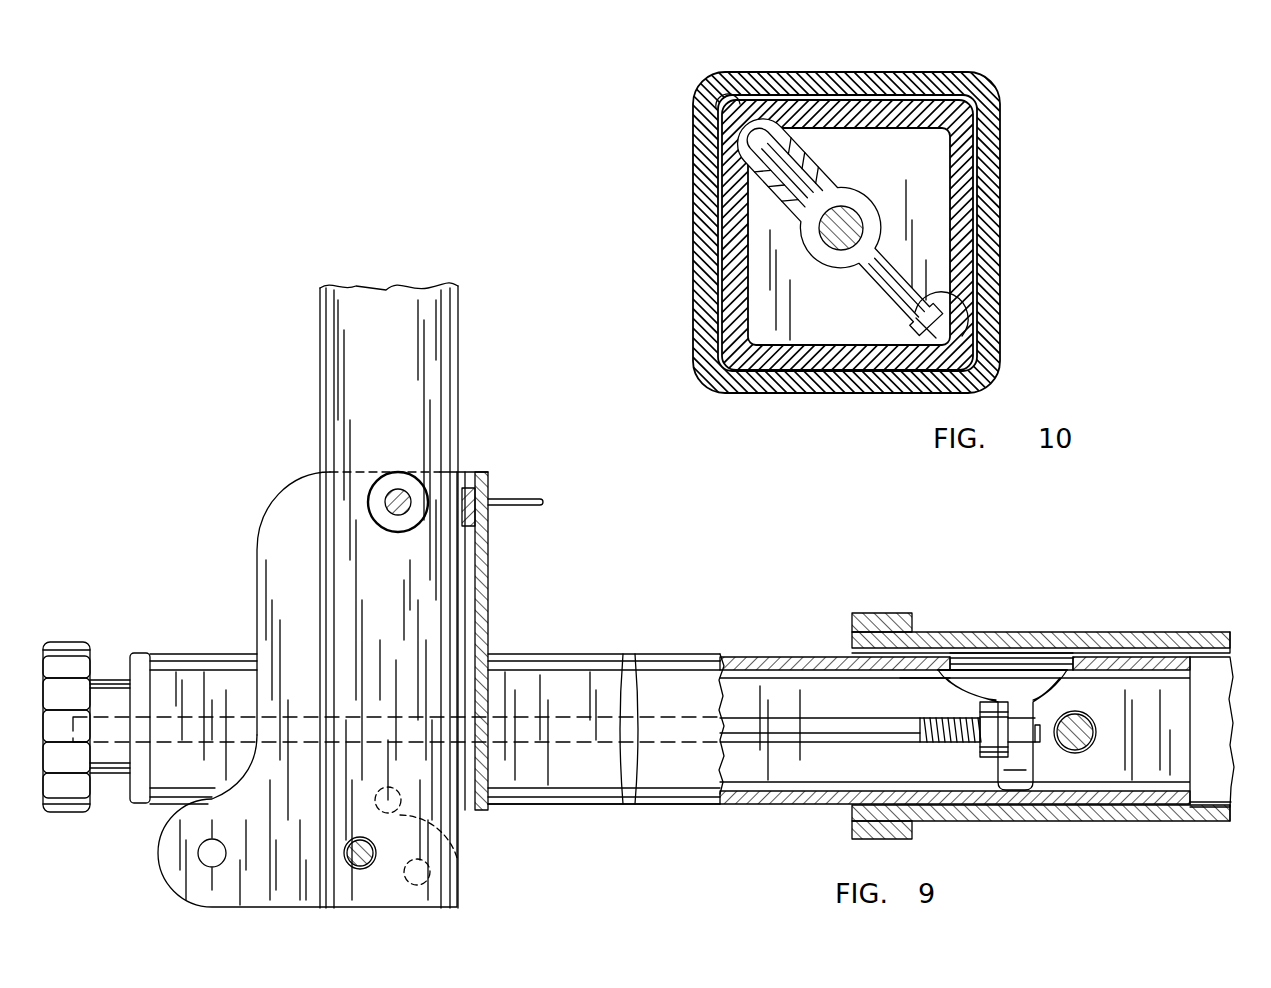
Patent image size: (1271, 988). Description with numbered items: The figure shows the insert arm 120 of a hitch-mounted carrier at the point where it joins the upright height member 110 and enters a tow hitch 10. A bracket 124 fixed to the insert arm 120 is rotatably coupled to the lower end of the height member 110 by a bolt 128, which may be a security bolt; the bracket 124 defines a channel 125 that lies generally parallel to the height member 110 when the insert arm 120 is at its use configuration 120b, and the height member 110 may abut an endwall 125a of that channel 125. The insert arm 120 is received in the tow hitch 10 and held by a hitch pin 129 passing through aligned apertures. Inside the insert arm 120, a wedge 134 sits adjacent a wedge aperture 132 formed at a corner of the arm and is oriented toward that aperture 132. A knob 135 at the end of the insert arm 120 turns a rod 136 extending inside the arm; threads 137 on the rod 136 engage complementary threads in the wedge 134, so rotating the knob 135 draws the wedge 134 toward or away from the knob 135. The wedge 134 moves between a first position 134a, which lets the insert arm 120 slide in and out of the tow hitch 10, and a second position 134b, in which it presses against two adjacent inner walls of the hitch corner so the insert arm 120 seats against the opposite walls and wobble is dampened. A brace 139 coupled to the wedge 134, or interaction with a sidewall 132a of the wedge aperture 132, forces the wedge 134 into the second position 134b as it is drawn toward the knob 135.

In FIG. 9, the tow hitch 10 is at (1207, 616).
In FIG. 10, the tow hitch 10 is at (996, 188).
In FIG. 9, the height member 110 is at (300, 327).
In FIG. 9, the insert arm 120 is at (651, 631).
In FIG. 10, the insert arm 120 is at (966, 262).
In FIG. 9, the use configuration 120b is at (652, 826).
In FIG. 9, the bracket 124 is at (255, 487).
In FIG. 9, the channel 125 is at (482, 450).
In FIG. 9, the endwall 125a is at (496, 560).
In FIG. 9, the bolt 128 is at (362, 858).
In FIG. 9, the hitch pin 129 is at (1088, 718).
In FIG. 9, the wedge aperture 132 is at (962, 660).
In FIG. 9, the sidewall 132a is at (937, 668).
In FIG. 9, the wedge 134 is at (1000, 670).
In FIG. 10, the wedge 134 is at (728, 122).
In FIG. 9, the first position 134a is at (1006, 670).
In FIG. 10, the second position 134b is at (714, 90).
In FIG. 9, the knob 135 is at (64, 662).
In FIG. 9, the rod 136 is at (780, 726).
In FIG. 10, the rod 136 is at (822, 236).
In FIG. 9, the threads 137 is at (985, 746).
In FIG. 9, the brace 139 is at (1013, 772).
In FIG. 10, the brace 139 is at (968, 306).